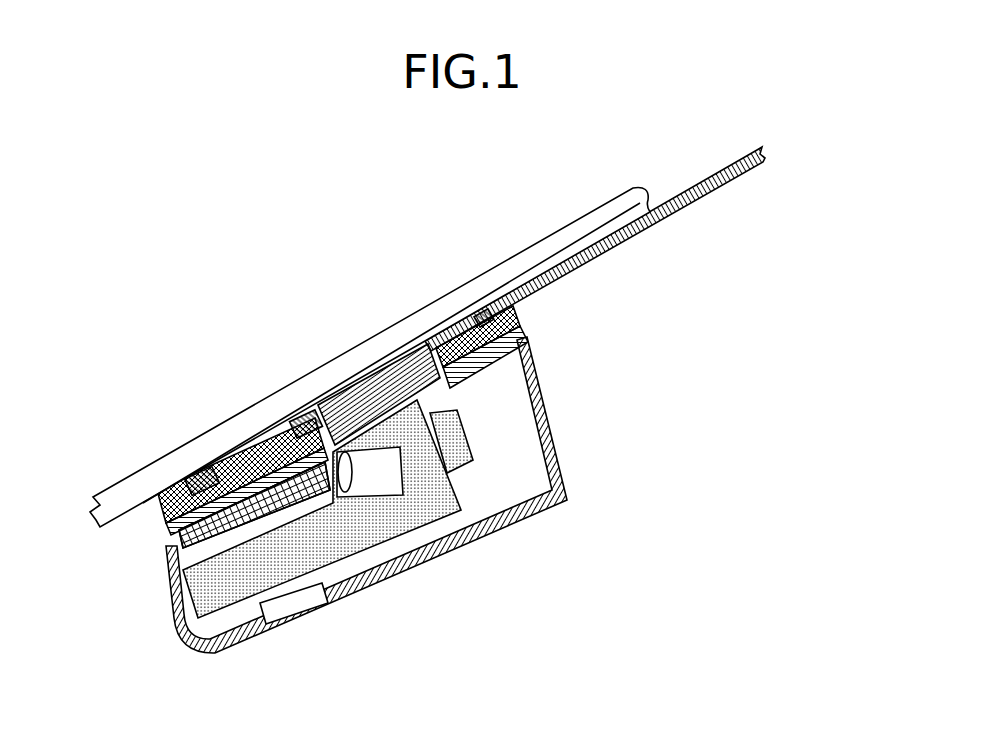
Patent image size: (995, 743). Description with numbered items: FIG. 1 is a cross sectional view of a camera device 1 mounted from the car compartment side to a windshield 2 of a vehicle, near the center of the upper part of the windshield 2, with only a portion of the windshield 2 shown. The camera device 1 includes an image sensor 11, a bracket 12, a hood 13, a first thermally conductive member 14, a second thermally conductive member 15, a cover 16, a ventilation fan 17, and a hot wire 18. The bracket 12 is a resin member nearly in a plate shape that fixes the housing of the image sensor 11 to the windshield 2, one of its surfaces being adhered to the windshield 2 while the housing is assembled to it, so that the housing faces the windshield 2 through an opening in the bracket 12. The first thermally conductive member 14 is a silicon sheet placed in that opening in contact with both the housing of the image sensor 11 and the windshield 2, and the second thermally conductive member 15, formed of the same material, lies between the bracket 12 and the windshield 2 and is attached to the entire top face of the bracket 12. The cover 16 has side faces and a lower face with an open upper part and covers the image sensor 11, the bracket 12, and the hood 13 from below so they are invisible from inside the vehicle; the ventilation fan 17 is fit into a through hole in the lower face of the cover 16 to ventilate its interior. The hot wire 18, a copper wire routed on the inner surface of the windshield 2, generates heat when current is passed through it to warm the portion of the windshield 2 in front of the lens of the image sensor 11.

The camera device 1 is at (776, 356).
The windshield 2 is at (573, 222).
The image sensor 11 is at (487, 428).
The bracket 12 is at (167, 551).
The hood 13 is at (207, 542).
The first thermally conductive member 14 is at (362, 395).
The second thermally conductive member 15 is at (160, 513).
The cover 16 is at (512, 526).
The ventilation fan 17 is at (304, 613).
The hot wire 18 is at (484, 314).